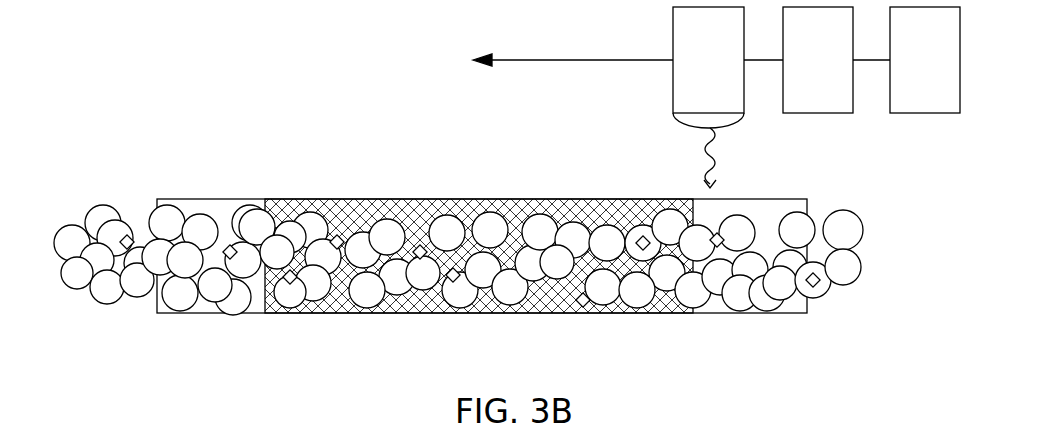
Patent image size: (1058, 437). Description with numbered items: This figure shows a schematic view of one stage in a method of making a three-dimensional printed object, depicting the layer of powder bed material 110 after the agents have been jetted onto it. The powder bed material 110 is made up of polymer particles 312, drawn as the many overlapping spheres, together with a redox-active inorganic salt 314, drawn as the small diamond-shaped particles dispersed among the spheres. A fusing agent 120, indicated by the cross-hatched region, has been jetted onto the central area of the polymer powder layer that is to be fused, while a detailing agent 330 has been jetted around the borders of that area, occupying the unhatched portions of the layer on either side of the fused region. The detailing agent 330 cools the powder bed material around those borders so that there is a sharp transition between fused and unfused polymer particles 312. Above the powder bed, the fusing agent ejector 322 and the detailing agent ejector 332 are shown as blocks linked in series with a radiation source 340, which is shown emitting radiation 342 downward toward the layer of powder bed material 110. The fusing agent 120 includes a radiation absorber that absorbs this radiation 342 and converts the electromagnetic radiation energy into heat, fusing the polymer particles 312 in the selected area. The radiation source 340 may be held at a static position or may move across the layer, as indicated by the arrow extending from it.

The powder bed material 110 is at (496, 214).
The fusing agent 120 is at (403, 208).
The polymer particles 312 is at (103, 215).
The redox-active inorganic salt 314 is at (132, 238).
The fusing agent ejector 322 is at (906, 60).
The detailing agent 330 is at (223, 207).
The detailing agent ejector 332 is at (798, 60).
The radiation source 340 is at (608, 67).
The radiation 342 is at (698, 175).